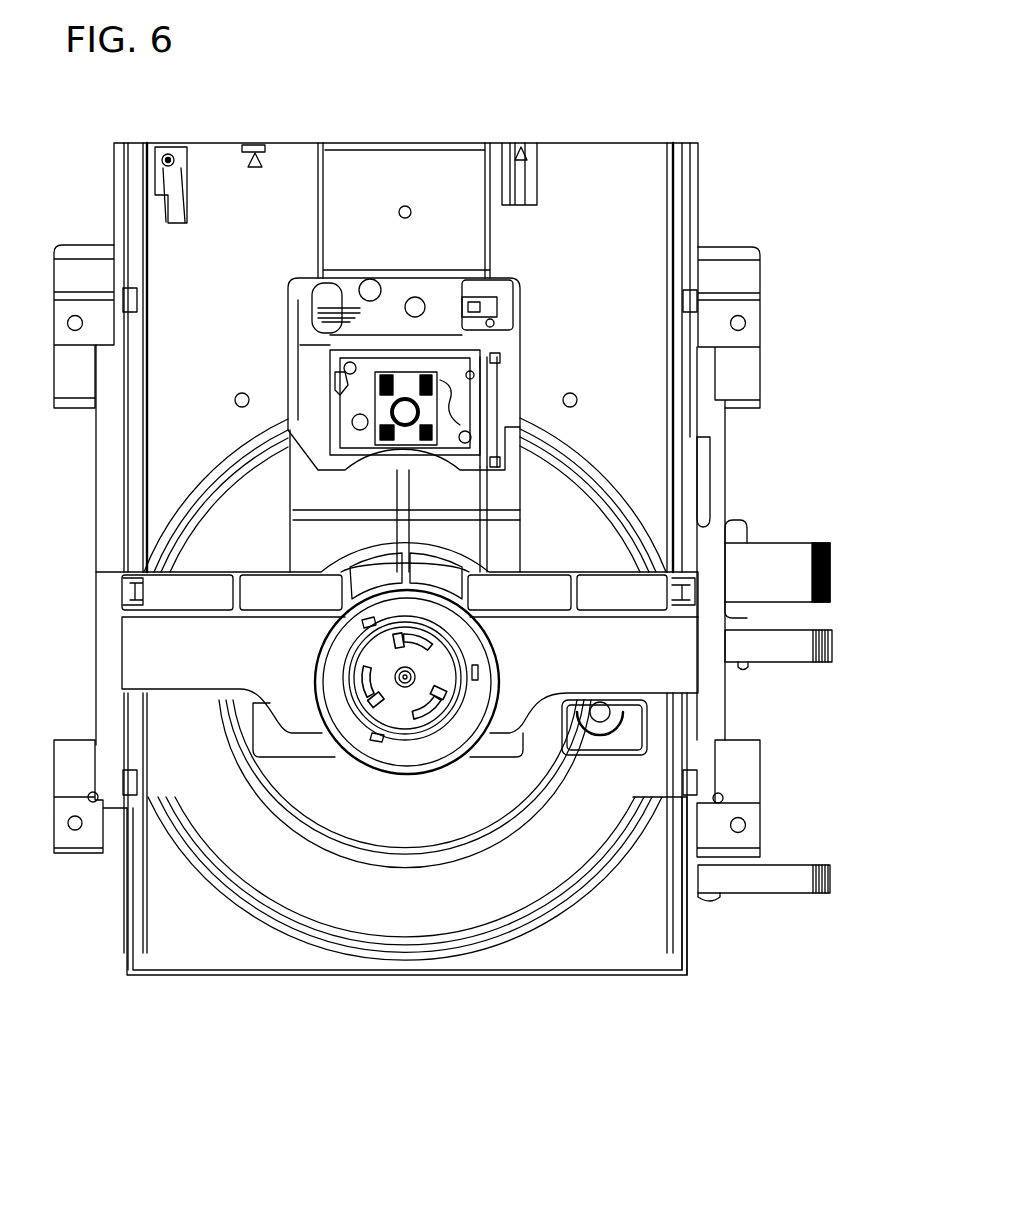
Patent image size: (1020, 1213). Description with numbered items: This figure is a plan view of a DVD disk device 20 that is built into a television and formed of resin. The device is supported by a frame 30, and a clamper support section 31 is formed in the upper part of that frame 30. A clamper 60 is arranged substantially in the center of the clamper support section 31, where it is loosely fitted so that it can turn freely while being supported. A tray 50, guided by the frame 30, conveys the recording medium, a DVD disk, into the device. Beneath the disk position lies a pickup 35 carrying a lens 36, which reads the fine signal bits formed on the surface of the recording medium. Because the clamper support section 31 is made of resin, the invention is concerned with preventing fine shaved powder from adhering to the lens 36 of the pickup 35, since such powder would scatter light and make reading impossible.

The DVD disk device 20 is at (628, 180).
The frame 30 is at (757, 270).
The clamper support section 31 is at (668, 662).
The pickup 35 is at (425, 360).
The lens 36 is at (402, 357).
The tray 50 is at (623, 943).
The clamper 60 is at (353, 720).